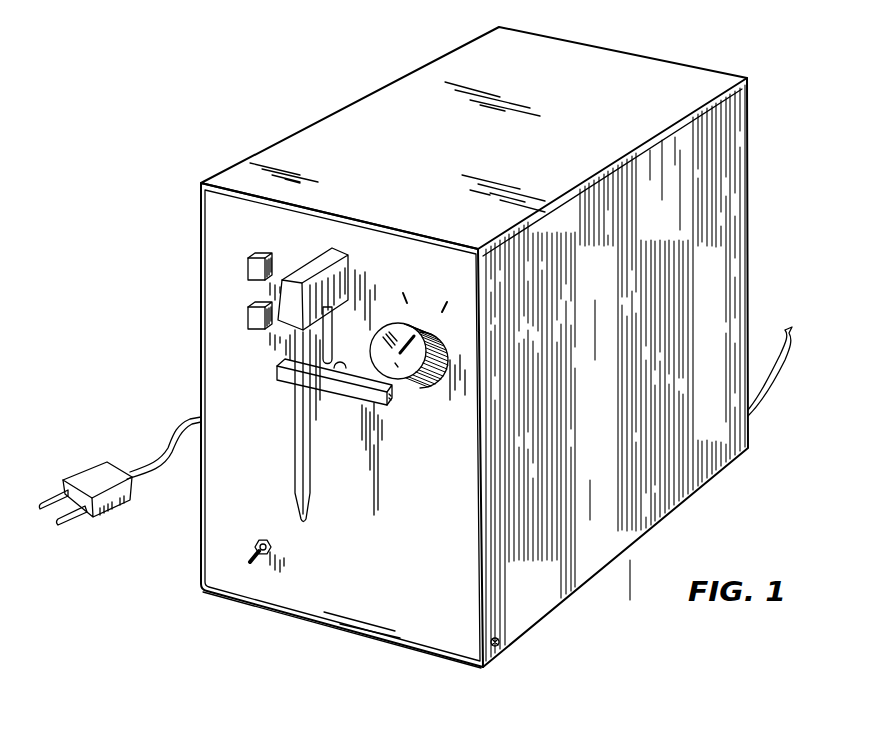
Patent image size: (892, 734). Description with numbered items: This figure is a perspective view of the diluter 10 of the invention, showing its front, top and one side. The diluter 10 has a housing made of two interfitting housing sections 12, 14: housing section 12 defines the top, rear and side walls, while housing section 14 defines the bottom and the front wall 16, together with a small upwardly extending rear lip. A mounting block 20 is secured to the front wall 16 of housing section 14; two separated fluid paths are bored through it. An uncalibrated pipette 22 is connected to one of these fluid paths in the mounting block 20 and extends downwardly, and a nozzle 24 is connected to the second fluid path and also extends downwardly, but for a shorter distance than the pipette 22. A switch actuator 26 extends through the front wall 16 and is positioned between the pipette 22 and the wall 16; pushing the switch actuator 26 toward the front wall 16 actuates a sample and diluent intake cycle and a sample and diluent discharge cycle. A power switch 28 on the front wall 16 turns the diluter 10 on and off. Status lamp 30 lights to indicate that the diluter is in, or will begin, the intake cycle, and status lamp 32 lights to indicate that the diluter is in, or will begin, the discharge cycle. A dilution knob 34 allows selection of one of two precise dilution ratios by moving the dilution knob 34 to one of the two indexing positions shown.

The diluter 10 is at (201, 306).
The housing section 12 is at (657, 73).
The housing section 14 is at (390, 645).
The front wall 16 is at (352, 600).
The mounting block 20 is at (348, 268).
The uncalibrated pipette 22 is at (312, 478).
The nozzle 24 is at (332, 335).
The switch actuator 26 is at (386, 395).
The power switch 28 is at (262, 540).
The status lamp 30 is at (262, 256).
The status lamp 32 is at (258, 333).
The dilution knob 34 is at (432, 372).